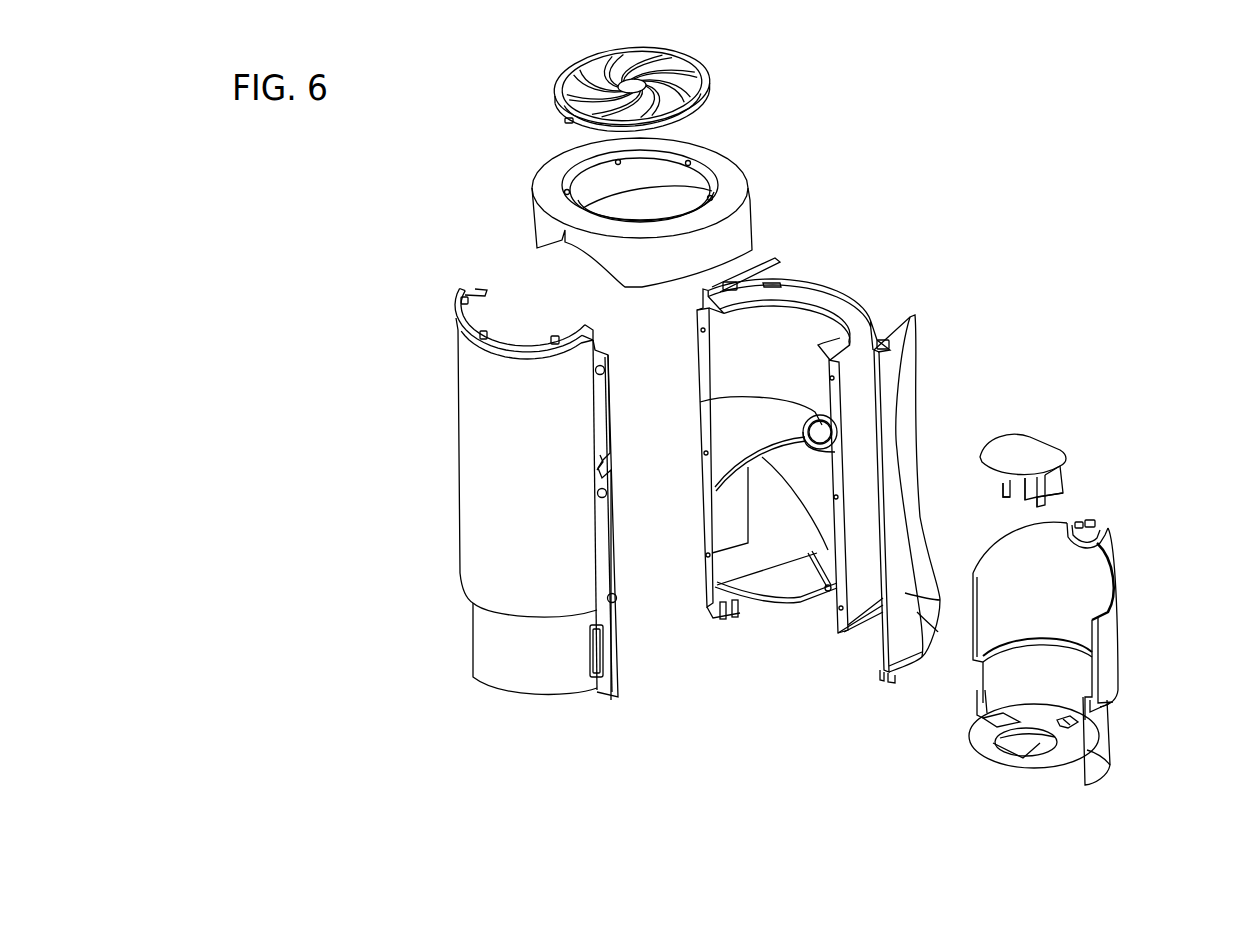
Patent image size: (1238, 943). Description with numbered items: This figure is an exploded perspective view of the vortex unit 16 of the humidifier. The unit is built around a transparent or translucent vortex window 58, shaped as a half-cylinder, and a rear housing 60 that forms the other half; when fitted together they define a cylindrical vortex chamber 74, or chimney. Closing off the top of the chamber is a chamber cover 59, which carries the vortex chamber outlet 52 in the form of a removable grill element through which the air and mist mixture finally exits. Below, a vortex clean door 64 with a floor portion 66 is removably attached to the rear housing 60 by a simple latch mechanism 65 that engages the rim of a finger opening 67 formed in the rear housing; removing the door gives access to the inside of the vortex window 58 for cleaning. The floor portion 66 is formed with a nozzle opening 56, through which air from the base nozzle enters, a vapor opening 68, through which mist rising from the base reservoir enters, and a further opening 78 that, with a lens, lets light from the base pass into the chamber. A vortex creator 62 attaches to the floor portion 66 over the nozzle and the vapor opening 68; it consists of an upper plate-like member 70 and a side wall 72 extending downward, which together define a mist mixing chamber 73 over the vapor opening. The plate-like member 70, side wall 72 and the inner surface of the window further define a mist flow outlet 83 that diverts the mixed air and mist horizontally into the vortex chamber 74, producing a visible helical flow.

The vortex unit 16 is at (293, 288).
The vortex chamber outlet 52 is at (597, 84).
The chamber cover 59 is at (727, 167).
The vortex window 58 is at (487, 422).
The rear housing 60 is at (843, 300).
The vortex chamber 74 is at (780, 317).
The finger opening 67 is at (815, 422).
The upper plate-like member 70 is at (1020, 456).
The vortex creator 62 is at (1057, 477).
The side wall 72 is at (1080, 497).
The mist mixing chamber 73 is at (1020, 493).
The mist flow outlet 83 is at (1033, 497).
The latch mechanism 65 is at (1087, 527).
The vortex clean door 64 is at (1110, 620).
The vapor opening 68 is at (1013, 750).
The nozzle opening 56 is at (1000, 712).
The opening 78 is at (1070, 723).
The floor portion 66 is at (1073, 750).